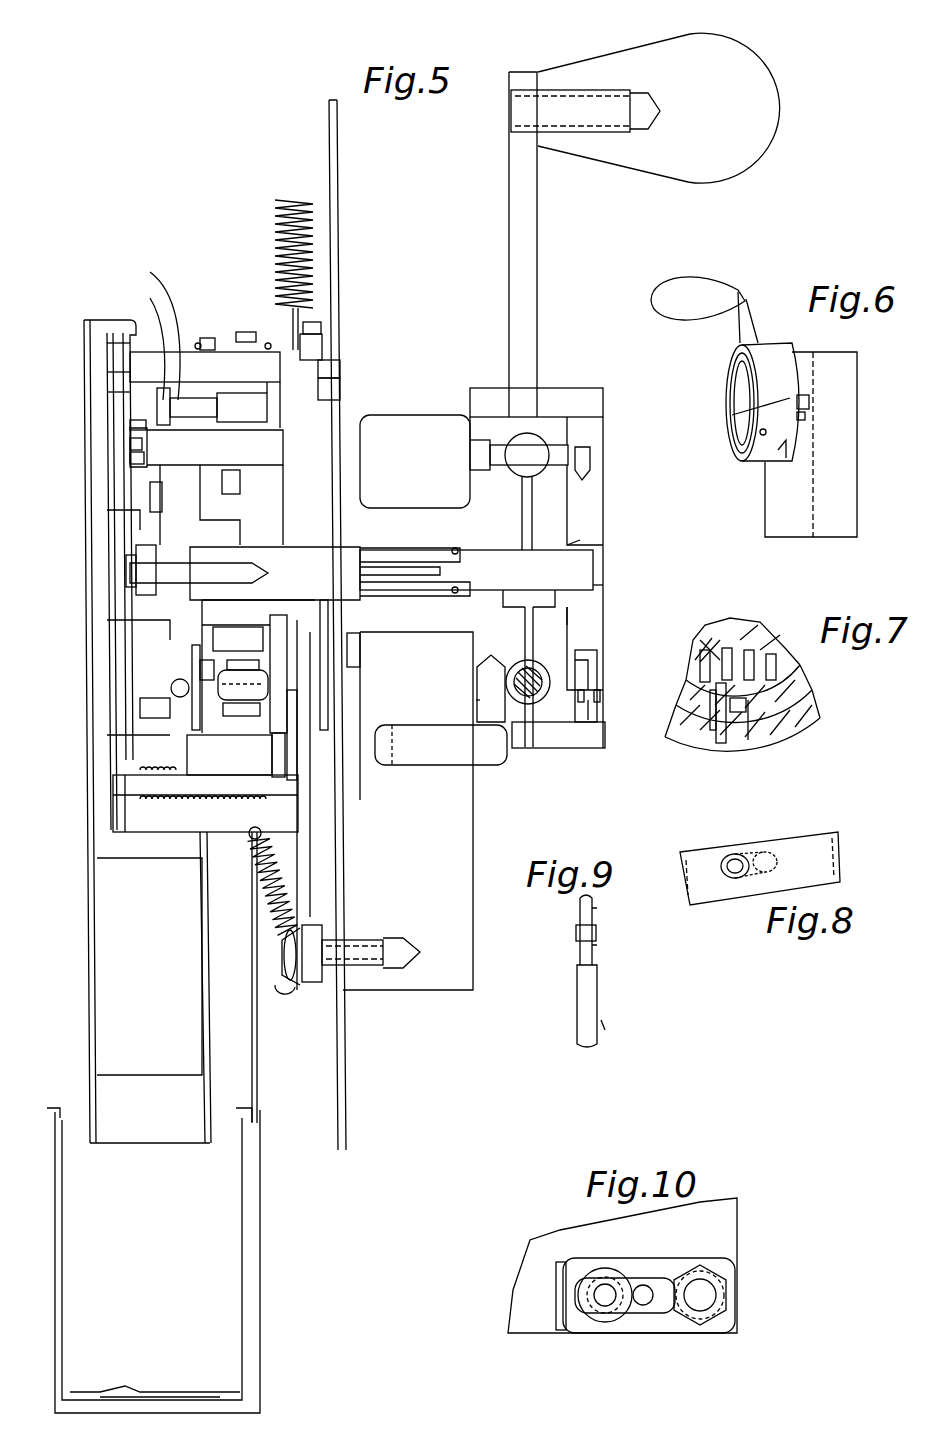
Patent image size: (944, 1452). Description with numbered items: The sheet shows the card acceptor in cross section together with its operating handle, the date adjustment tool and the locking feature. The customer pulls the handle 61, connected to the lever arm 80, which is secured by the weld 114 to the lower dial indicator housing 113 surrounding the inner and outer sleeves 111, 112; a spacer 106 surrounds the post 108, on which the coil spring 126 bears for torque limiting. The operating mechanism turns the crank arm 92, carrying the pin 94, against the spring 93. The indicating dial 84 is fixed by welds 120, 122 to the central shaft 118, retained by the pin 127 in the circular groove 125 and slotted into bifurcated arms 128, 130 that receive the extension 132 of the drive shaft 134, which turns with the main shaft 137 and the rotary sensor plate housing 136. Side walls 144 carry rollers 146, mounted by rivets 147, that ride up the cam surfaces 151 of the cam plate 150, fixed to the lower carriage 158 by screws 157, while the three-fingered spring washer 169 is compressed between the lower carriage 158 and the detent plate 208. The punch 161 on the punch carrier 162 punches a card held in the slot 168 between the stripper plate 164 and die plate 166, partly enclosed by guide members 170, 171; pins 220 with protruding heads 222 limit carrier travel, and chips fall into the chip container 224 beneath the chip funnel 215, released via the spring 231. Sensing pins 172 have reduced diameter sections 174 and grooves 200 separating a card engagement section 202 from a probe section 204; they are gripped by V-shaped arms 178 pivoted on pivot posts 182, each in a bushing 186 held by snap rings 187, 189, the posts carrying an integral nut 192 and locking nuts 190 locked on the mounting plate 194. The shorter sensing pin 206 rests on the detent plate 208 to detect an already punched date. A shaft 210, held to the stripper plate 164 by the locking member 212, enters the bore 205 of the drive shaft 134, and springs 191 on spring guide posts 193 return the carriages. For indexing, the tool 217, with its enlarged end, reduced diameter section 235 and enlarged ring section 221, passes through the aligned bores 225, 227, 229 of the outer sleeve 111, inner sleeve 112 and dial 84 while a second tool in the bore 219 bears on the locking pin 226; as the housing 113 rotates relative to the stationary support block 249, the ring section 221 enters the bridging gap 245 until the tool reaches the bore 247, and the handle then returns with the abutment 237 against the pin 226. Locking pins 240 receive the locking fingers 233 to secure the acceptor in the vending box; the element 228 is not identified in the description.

In FIG. 5, the handle 61 is at (702, 116).
In FIG. 6, the handle 61 is at (662, 309).
In FIG. 5, the lever arm 80 is at (536, 240).
In FIG. 6, the lever arm 80 is at (746, 302).
In FIG. 5, the indicating dial 84 is at (596, 522).
In FIG. 6, the indicating dial 84 is at (740, 388).
In FIG. 7, the indicating dial 84 is at (760, 625).
In FIG. 5, the crank arm 92 is at (340, 372).
In FIG. 5, the spring 93 is at (272, 200).
In FIG. 5, the pin 94 is at (340, 392).
In FIG. 5, the spacer 106 is at (545, 440).
In FIG. 5, the post 108 is at (545, 455).
In FIG. 5, the outer handle sleeve 111 is at (488, 650).
In FIG. 6, the outer handle sleeve 111 is at (782, 452).
In FIG. 5, the inner handle sleeve 112 is at (534, 650).
In FIG. 6, the inner handle sleeve 112 is at (738, 358).
In FIG. 7, the inner handle sleeve 112 is at (795, 672).
In FIG. 5, the lower dial indicator housing 113 is at (554, 408).
In FIG. 6, the lower dial indicator housing 113 is at (768, 374).
In FIG. 7, the lower dial indicator housing 113 is at (810, 700).
In FIG. 5, the weld 114 is at (548, 386).
In FIG. 5, the central shaft 118 is at (548, 582).
In FIG. 5, the weld 120 is at (600, 548).
In FIG. 5, the weld 122 is at (600, 590).
In FIG. 5, the circular groove 125 is at (456, 548).
In FIG. 5, the coil spring 126 is at (548, 672).
In FIG. 5, the pin 127 is at (458, 592).
In FIG. 5, the bifurcated arm 128 is at (402, 552).
In FIG. 5, the bifurcated arm 130 is at (415, 592).
In FIG. 5, the extension 132 is at (430, 574).
In FIG. 5, the drive shaft 134 is at (310, 576).
In FIG. 5, the rotary sensor plate housing 136 is at (280, 665).
In FIG. 5, the main shaft 137 is at (216, 623).
In FIG. 5, the side walls 144 is at (264, 710).
In FIG. 5, the rollers 146 is at (262, 696).
In FIG. 5, the rivets 147 is at (300, 776).
In FIG. 5, the cam plate 150 is at (195, 660).
In FIG. 5, the cam surfaces 151 is at (220, 649).
In FIG. 5, the screws 157 is at (232, 494).
In FIG. 5, the lower carriage 158 is at (118, 726).
In FIG. 5, the punch 161 is at (150, 708).
In FIG. 5, the punch carrier 162 is at (160, 626).
In FIG. 5, the stripper plate 164 is at (112, 357).
In FIG. 5, the die plate 166 is at (110, 380).
In FIG. 5, the slot 168 is at (125, 518).
In FIG. 5, the spring washer 169 is at (152, 492).
In FIG. 5, the guide member 170 is at (122, 400).
In FIG. 5, the guide member 171 is at (122, 737).
In FIG. 5, the sensing pins 172 is at (162, 459).
In FIG. 5, the reduced diameter sections 174 is at (300, 440).
In FIG. 5, the V-shaped arms 178 is at (235, 326).
In FIG. 5, the pivot posts 182 is at (206, 376).
In FIG. 5, the bushing 186 is at (198, 342).
In FIG. 5, the snap ring 187 is at (200, 344).
In FIG. 5, the snap ring 189 is at (268, 342).
In FIG. 5, the locking nuts 190 is at (322, 344).
In FIG. 5, the springs 191 is at (112, 768).
In FIG. 5, the integral nut 192 is at (321, 328).
In FIG. 5, the spring guide posts 193 is at (132, 793).
In FIG. 5, the mounting plate 194 is at (312, 902).
In FIG. 10, the mounting plate 194 is at (728, 1222).
In FIG. 5, the grooves 200 is at (130, 444).
In FIG. 5, the card engagement section 202 is at (130, 462).
In FIG. 5, the probe section 204 is at (130, 428).
In FIG. 5, the bore / enlarged end 205 is at (256, 580).
In FIG. 9, the bore / enlarged end 205 is at (596, 992).
In FIG. 5, the sensing pin 206 is at (210, 764).
In FIG. 5, the detent plate 208 is at (180, 812).
In FIG. 5, the shaft 210 is at (145, 556).
In FIG. 5, the locking member 212 is at (130, 576).
In FIG. 5, the chip funnel 215 is at (86, 320).
In FIG. 9, the tool 217 is at (604, 1024).
In FIG. 5, the bore 219 is at (488, 705).
In FIG. 6, the bore 219 is at (806, 416).
In FIG. 5, the pins 220 is at (142, 331).
In FIG. 9, the enlarged ring section 221 is at (578, 930).
In FIG. 5, the protruding heads 222 is at (134, 343).
In FIG. 5, the chip container 224 is at (73, 1107).
In FIG. 5, the bore 225 is at (586, 748).
In FIG. 6, the bore 225 is at (762, 436).
In FIG. 7, the bore 225 is at (722, 744).
In FIG. 8, the bore 225 is at (726, 860).
In FIG. 5, the locking pin 226 is at (424, 751).
In FIG. 6, the locking pin 226 is at (806, 396).
In FIG. 5, the bore 227 is at (592, 712).
In FIG. 7, the bore 227 is at (712, 706).
In FIG. 5, the rod 228 is at (337, 190).
In FIG. 5, the bore 229 is at (586, 478).
In FIG. 7, the bore 229 is at (706, 640).
In FIG. 5, the spring 231 is at (262, 888).
In FIG. 10, the locking fingers 233 is at (724, 1262).
In FIG. 9, the reduced diameter section 235 is at (596, 946).
In FIG. 6, the abutment 237 is at (734, 418).
In FIG. 5, the locking pins 240 is at (278, 960).
In FIG. 10, the locking pins 240 is at (726, 1294).
In FIG. 7, the bridging gap 245 is at (750, 730).
In FIG. 7, the bore 247 is at (748, 712).
In FIG. 5, the stationary support block 249 is at (400, 872).
In FIG. 6, the stationary support block 249 is at (784, 511).